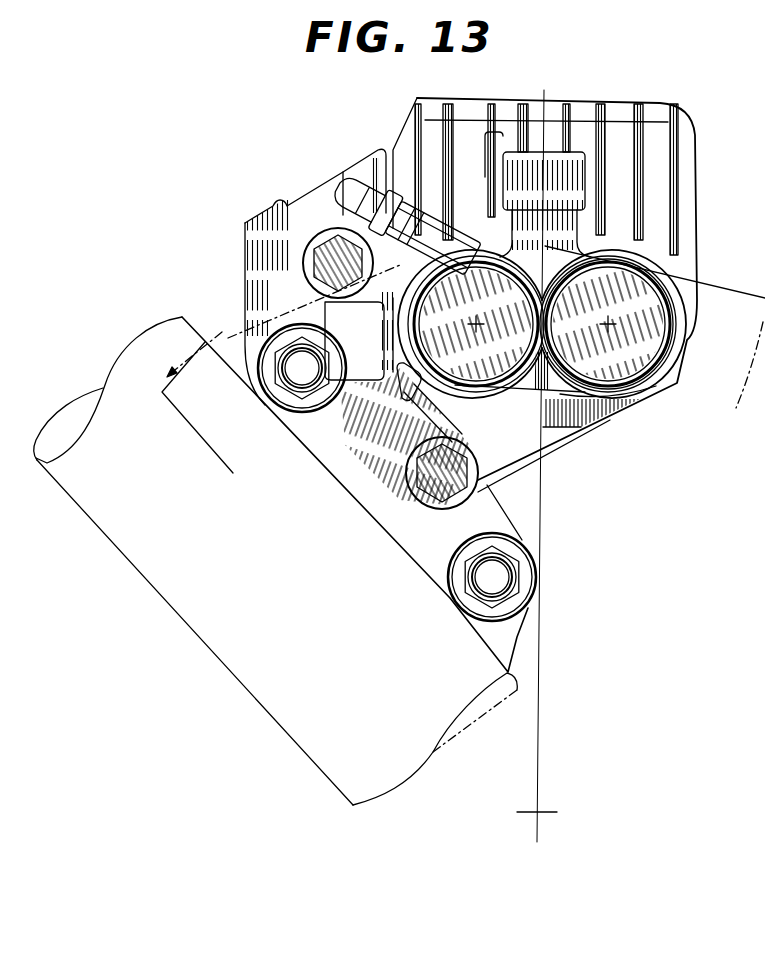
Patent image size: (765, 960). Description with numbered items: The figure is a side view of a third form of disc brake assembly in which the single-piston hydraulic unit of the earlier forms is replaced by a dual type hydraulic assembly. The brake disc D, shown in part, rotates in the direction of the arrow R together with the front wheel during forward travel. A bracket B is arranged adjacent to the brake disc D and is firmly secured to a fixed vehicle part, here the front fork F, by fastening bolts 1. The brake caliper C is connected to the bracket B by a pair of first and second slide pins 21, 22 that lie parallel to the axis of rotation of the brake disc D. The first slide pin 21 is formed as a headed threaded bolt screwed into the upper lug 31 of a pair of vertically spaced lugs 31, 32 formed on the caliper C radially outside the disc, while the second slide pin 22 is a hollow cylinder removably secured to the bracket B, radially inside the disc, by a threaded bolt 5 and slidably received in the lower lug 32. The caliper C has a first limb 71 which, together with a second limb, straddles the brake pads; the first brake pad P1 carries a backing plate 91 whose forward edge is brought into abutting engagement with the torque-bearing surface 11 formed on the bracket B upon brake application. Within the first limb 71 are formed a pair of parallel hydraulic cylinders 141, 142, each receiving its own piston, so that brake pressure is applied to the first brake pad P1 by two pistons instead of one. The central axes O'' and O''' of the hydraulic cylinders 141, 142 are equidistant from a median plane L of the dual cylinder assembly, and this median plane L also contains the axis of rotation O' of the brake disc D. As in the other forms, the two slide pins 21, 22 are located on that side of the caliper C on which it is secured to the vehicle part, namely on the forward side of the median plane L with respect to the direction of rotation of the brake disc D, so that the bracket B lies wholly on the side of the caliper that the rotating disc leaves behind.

The brake caliper C is at (520, 269).
The brake disc D is at (701, 282).
The direction of rotation arrow R is at (213, 341).
The front fork F is at (137, 562).
The bracket B is at (386, 516).
The median plane L is at (540, 638).
The axis of rotation of brake disc O' is at (548, 794).
The central axis of first hydraulic cylinder O'' is at (485, 305).
The central axis of second hydraulic cylinder O''' is at (619, 305).
The fastening bolts 1 is at (289, 415).
The first slide pin 21 is at (320, 268).
The upper lug 31 is at (366, 300).
The torque-bearing surface 11 is at (426, 402).
The first hydraulic cylinder 141 is at (478, 374).
The second hydraulic cylinder 142 is at (672, 332).
The backing plate 91 is at (642, 368).
The first limb 71 is at (648, 394).
The first brake pad P1 is at (645, 417).
The threaded bolt 5 is at (423, 470).
The second slide pin 22 is at (430, 492).
The lower lug 32 is at (507, 463).